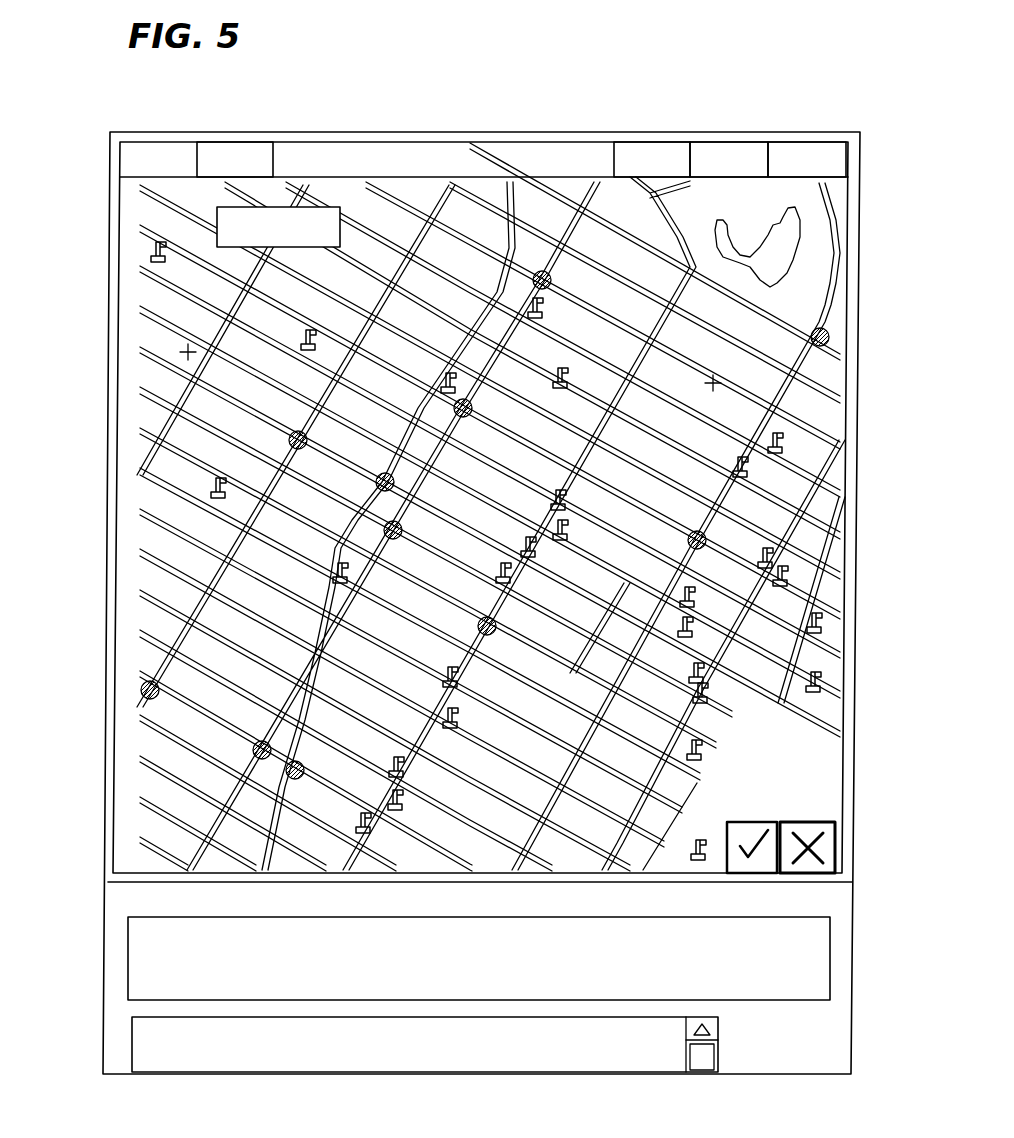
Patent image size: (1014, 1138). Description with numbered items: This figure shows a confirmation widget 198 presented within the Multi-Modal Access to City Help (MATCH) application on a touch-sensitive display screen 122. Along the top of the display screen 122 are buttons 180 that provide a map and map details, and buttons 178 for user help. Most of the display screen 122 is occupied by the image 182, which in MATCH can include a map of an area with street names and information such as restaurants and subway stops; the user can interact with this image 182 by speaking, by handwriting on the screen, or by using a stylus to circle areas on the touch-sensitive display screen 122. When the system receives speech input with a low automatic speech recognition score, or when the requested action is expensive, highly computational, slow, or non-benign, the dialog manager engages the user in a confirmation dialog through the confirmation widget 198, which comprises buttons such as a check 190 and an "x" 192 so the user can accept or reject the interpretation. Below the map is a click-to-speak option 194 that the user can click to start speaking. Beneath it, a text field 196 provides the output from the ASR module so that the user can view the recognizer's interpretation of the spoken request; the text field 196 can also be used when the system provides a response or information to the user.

The display screen 122 is at (858, 513).
The buttons for user help 178 is at (822, 141).
The buttons that provide a map and map details 180 is at (240, 148).
The image 182 is at (165, 382).
The check 190 is at (757, 823).
The "x" 192 is at (806, 823).
The click-to-speak option 194 is at (818, 951).
The text field 196 is at (132, 1040).
The confirmation widget 198 is at (775, 793).